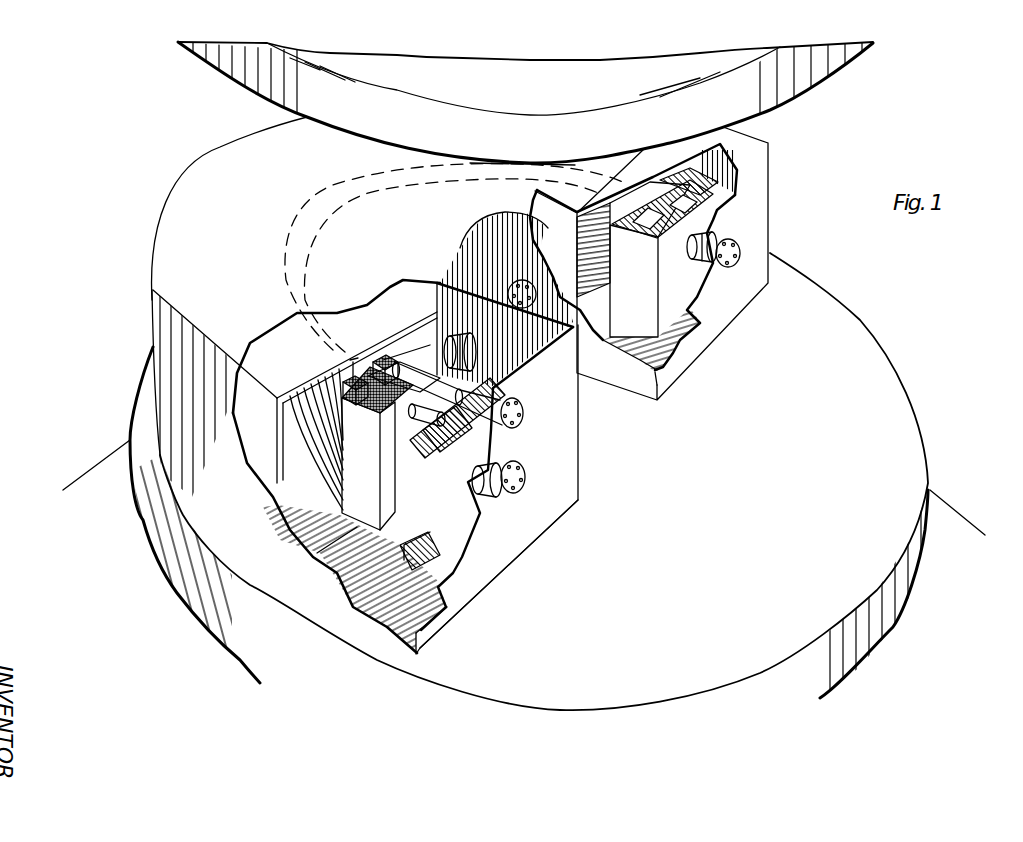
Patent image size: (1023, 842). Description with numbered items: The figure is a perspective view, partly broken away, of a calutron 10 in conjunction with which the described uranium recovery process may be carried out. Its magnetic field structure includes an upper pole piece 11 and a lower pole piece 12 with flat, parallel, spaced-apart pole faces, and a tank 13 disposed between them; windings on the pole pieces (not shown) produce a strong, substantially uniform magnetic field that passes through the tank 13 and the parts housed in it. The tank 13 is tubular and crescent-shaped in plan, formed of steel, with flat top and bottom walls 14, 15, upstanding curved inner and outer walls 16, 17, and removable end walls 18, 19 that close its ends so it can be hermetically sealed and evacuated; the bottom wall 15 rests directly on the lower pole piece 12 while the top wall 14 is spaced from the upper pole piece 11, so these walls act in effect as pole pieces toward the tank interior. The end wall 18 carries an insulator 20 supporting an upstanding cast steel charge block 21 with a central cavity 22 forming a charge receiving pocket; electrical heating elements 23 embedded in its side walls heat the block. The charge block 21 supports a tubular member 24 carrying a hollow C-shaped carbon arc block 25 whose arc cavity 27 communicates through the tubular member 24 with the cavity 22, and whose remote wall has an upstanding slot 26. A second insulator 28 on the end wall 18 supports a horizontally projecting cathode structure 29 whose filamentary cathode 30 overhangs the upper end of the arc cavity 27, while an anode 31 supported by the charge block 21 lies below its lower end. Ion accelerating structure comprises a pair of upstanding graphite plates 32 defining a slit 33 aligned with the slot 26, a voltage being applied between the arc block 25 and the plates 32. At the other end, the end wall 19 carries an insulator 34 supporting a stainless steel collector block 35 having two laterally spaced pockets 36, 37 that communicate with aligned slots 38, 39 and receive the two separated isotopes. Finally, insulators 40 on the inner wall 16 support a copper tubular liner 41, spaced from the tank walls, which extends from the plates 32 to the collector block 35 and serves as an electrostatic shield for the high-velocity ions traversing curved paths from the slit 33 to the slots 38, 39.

The calutron 10 is at (50, 239).
The upper pole piece 11 is at (792, 92).
The lower pole piece 12 is at (918, 490).
The tank 13 is at (170, 213).
The top wall 14 is at (160, 300).
The bottom wall 15 is at (422, 615).
The inner wall 16 is at (459, 245).
The outer wall 17 is at (203, 365).
The end wall 18 is at (520, 527).
The end wall 19 is at (684, 364).
The insulator 20 is at (478, 486).
The charge block 21 is at (457, 548).
The cavity 22 is at (457, 427).
The electrical heating elements 23 is at (420, 450).
The tubular member 24 is at (425, 433).
The arc block 25 is at (352, 497).
The slot 26 is at (377, 399).
The arc cavity 27 is at (416, 422).
The insulator 28 is at (510, 387).
The cathode structure 29 is at (383, 360).
The filamentary cathode 30 is at (368, 374).
The anode 31 is at (352, 526).
The upstanding plates 32 is at (330, 370).
The slit 33 is at (352, 363).
The insulator 34 is at (700, 258).
The collector block 35 is at (690, 322).
The pocket 36 is at (684, 232).
The pocket 37 is at (668, 196).
The slot 38 is at (640, 205).
The slot 39 is at (672, 185).
The insulators 40 is at (524, 292).
The tubular liner 41 is at (257, 348).